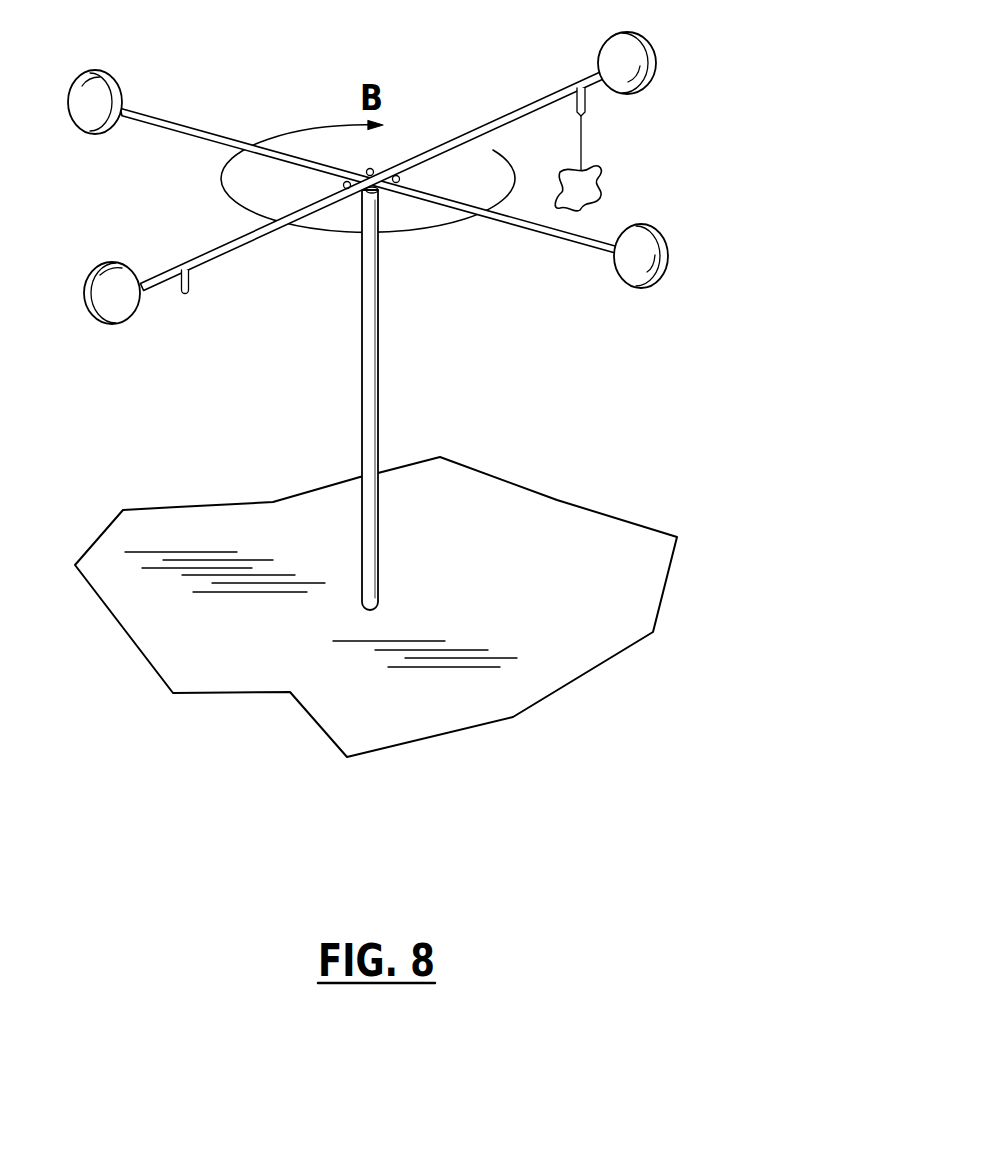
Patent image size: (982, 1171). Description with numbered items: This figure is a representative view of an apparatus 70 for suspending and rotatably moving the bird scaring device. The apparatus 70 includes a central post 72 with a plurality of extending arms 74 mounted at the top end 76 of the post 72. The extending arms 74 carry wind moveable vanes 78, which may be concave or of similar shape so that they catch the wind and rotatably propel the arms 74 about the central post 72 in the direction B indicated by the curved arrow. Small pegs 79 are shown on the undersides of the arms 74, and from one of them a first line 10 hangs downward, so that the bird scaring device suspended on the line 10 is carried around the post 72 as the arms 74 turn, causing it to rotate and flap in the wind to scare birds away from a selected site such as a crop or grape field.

The first line 10 is at (580, 152).
The apparatus 70 is at (706, 256).
The central post 72 is at (378, 515).
The extending arms 74 is at (153, 288).
The top end 76 is at (364, 188).
The wind moveable vanes 78 is at (682, 49).
The hanging peg 79 is at (189, 284).